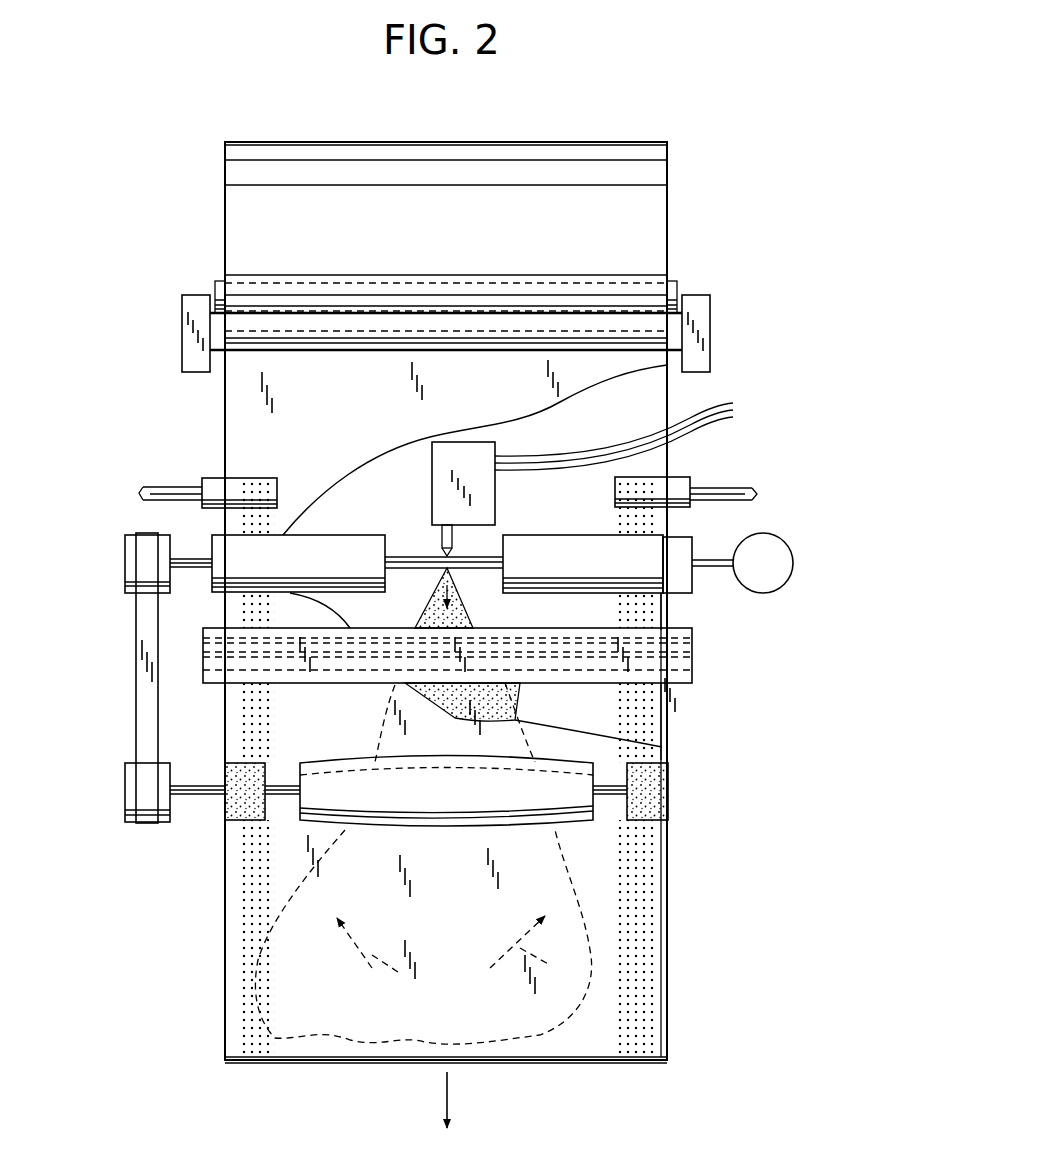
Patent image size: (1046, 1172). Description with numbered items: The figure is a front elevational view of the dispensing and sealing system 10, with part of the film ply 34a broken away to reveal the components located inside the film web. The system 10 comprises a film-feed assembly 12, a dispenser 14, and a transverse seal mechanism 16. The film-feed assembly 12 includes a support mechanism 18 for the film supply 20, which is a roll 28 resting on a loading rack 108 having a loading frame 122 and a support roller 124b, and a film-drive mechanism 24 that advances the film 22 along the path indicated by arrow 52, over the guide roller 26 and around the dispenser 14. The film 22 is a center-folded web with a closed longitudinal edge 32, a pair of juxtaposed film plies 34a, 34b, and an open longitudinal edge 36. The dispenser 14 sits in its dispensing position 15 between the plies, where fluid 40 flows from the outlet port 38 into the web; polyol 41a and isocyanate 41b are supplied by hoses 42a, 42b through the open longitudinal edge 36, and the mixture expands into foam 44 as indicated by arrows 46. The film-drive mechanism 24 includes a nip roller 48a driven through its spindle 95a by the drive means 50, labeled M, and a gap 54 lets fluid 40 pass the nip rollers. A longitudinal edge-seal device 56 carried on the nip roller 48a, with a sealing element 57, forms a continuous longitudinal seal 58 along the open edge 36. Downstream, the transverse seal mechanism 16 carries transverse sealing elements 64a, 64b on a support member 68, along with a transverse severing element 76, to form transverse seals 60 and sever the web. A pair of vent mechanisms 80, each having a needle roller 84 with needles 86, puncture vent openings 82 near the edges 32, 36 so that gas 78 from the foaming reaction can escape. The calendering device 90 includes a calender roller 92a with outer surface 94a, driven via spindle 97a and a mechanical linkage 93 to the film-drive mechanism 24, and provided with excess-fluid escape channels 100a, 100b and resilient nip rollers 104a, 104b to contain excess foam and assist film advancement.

The dispensing and sealing system 10 is at (670, 110).
The film-feed assembly 12 is at (123, 428).
The dispenser 14 is at (467, 455).
The dispensing position 15 is at (430, 482).
The transverse seal mechanism 16 is at (696, 658).
The support mechanism 18 is at (716, 312).
The film supply 20 is at (222, 207).
The film 22 is at (222, 410).
The film-drive mechanism 24 is at (697, 540).
The guide roller 26 is at (290, 278).
The roll 28 is at (461, 226).
The closed longitudinal edge 32 is at (225, 983).
The film ply 34a is at (348, 399).
The film ply 34b is at (642, 418).
The open longitudinal edge 36 is at (692, 527).
The outlet port 38 is at (440, 537).
The fluid 40 is at (455, 588).
The polyol 41a is at (740, 405).
The isocyanate 41b is at (740, 418).
The hose 42a is at (735, 405).
The hose 42b is at (735, 421).
The foam 44 is at (490, 703).
The arrows 46 is at (372, 968).
The nip roller 48a is at (318, 569).
The drive means 50 is at (781, 583).
The direction 52 is at (449, 1097).
The gap 54 is at (480, 550).
The longitudinal edge-seal device 56 is at (658, 567).
The sealing element 57 is at (680, 580).
The longitudinal seal 58 is at (670, 615).
The transverse seal 60 is at (374, 1060).
The transverse sealing element 64a is at (345, 636).
The transverse sealing element 64b is at (378, 680).
The support member 68 is at (668, 682).
The transverse severing element 76 is at (235, 650).
The gas 78 is at (640, 738).
The vent mechanism 80 is at (207, 477).
The vent openings 82 is at (655, 845).
The needle roller 84 is at (236, 480).
The needles 86 is at (277, 486).
The calendering device 90 is at (405, 832).
The calender roller 92a is at (465, 796).
The mechanical linkage 93 is at (145, 710).
The outer surface 94a is at (315, 830).
The spindle 95a is at (191, 568).
The spindle 97a is at (191, 797).
The excess-fluid escape channel 100a is at (585, 832).
The excess-fluid escape channel 100b is at (280, 777).
The nip roller 104a is at (668, 783).
The nip roller 104b is at (236, 776).
The loading rack 108 is at (182, 340).
The loading frame 122 is at (697, 295).
The support roller 124b is at (592, 345).